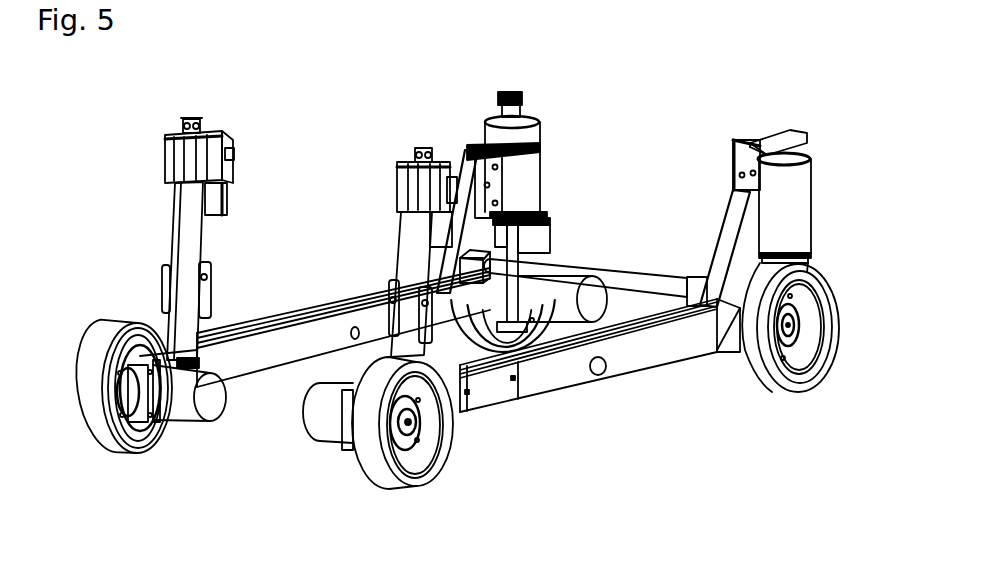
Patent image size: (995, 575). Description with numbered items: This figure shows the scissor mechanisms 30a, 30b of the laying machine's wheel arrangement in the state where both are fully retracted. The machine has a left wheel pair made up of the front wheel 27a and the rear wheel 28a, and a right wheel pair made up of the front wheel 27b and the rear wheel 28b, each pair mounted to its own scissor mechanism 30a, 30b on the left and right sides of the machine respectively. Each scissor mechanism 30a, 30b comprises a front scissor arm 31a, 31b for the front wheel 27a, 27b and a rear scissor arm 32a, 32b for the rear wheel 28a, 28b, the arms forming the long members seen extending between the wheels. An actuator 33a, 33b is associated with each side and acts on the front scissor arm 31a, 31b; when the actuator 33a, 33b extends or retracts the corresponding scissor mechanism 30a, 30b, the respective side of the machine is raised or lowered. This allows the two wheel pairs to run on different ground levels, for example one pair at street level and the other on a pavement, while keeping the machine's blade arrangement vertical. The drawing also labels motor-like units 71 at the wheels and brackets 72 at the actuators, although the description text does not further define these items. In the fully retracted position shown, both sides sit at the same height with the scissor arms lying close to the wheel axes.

The front wheel 27a is at (362, 437).
The front wheel 27b is at (89, 414).
The rear wheel 28a is at (805, 391).
The rear wheel 28b is at (560, 262).
The scissor mechanism 30a is at (617, 428).
The scissor mechanism 30b is at (298, 272).
The front scissor arm 31a is at (630, 278).
The front scissor arm 31b is at (251, 352).
The rear scissor arm 32a is at (552, 370).
The rear scissor arm 32b is at (237, 326).
The actuator 33a is at (416, 240).
The actuator 33b is at (187, 228).
The wheel motor 71 is at (185, 393).
The mounting bracket 72 is at (520, 180).